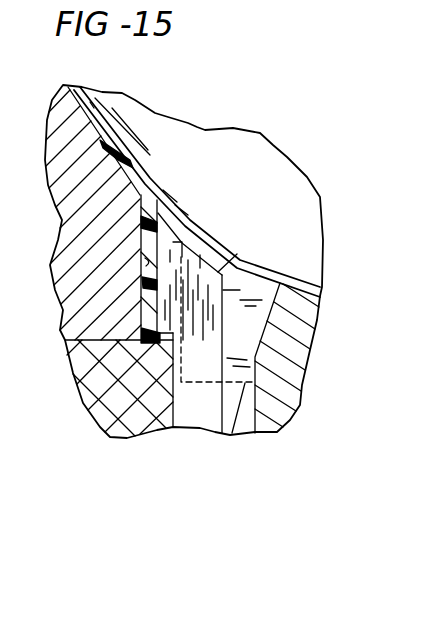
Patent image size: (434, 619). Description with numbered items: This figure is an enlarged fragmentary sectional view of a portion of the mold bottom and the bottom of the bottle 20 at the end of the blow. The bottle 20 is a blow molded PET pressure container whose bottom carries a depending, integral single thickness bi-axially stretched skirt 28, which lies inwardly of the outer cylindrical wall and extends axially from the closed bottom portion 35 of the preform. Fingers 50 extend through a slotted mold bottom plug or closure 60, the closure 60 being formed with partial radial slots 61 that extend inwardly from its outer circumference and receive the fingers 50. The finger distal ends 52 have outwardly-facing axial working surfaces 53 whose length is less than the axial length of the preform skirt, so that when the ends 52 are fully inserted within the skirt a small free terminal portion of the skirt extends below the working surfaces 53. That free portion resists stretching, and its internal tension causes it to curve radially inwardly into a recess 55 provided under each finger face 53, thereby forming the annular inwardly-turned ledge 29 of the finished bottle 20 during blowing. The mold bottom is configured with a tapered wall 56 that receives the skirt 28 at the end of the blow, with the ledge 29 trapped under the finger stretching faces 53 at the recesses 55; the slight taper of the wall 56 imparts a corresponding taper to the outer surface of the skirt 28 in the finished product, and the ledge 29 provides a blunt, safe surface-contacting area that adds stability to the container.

The bottle 20 is at (279, 146).
The closed bottom portion 35 is at (153, 182).
The finger distal ends 52 is at (233, 249).
The skirt 28 is at (147, 242).
The tapered wall 56 is at (142, 262).
The working surfaces 53 is at (138, 290).
The fingers 50 is at (197, 417).
The partial radial slots 61 is at (258, 320).
The mold bottom plug 60 is at (273, 407).
The ledge 29 is at (120, 377).
The recess 55 is at (110, 437).